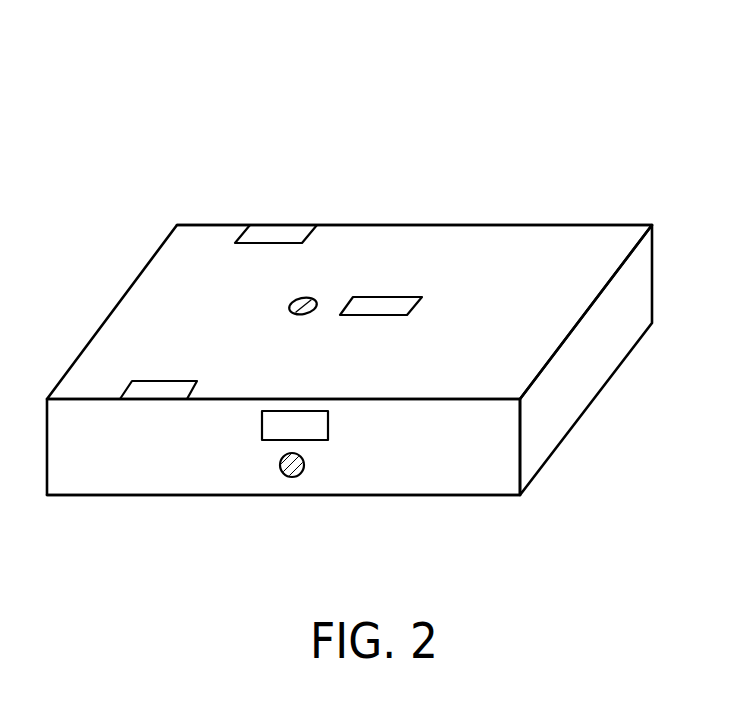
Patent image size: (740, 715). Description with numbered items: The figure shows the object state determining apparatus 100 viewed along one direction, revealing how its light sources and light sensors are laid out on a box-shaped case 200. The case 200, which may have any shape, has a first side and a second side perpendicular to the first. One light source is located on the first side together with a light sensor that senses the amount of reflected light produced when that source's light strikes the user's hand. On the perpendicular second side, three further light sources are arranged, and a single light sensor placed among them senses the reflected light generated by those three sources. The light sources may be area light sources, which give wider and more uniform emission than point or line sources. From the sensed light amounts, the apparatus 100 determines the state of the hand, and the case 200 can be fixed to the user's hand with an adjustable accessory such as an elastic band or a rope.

The object state determining apparatus 100 is at (363, 304).
The case 200 is at (500, 495).